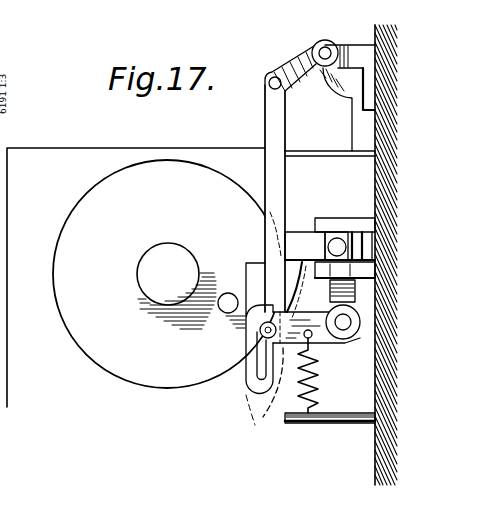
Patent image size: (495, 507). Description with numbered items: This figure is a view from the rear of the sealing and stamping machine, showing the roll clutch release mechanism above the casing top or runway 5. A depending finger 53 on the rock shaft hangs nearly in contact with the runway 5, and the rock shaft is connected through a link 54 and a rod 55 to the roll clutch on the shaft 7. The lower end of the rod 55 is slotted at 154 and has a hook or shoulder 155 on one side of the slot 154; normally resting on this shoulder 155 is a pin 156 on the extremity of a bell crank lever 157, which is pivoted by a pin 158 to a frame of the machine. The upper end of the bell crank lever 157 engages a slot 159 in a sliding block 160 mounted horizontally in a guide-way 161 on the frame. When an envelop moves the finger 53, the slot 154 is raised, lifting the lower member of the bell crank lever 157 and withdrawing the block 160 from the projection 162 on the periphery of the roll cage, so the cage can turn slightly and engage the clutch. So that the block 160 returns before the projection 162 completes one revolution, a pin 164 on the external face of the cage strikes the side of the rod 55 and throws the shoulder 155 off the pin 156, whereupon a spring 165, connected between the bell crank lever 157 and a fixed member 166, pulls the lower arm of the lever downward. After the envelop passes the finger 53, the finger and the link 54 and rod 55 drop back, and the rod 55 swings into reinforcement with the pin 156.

The casing top or runway 5 is at (49, 157).
The shaft 7 is at (148, 282).
The depending finger 53 is at (352, 114).
The link 54 is at (296, 64).
The rod 55 is at (277, 120).
The slot 154 is at (257, 348).
The hook or shoulder 155 is at (264, 418).
The pin 156 is at (259, 331).
The bell crank lever 157 is at (360, 288).
The pin 158 is at (343, 322).
The slot 159 is at (339, 238).
The sliding block 160 is at (303, 238).
The guide-way 161 is at (362, 227).
The projection 162 is at (293, 267).
The pin 164 is at (228, 293).
The spring 165 is at (317, 378).
The fixed member 166 is at (330, 425).